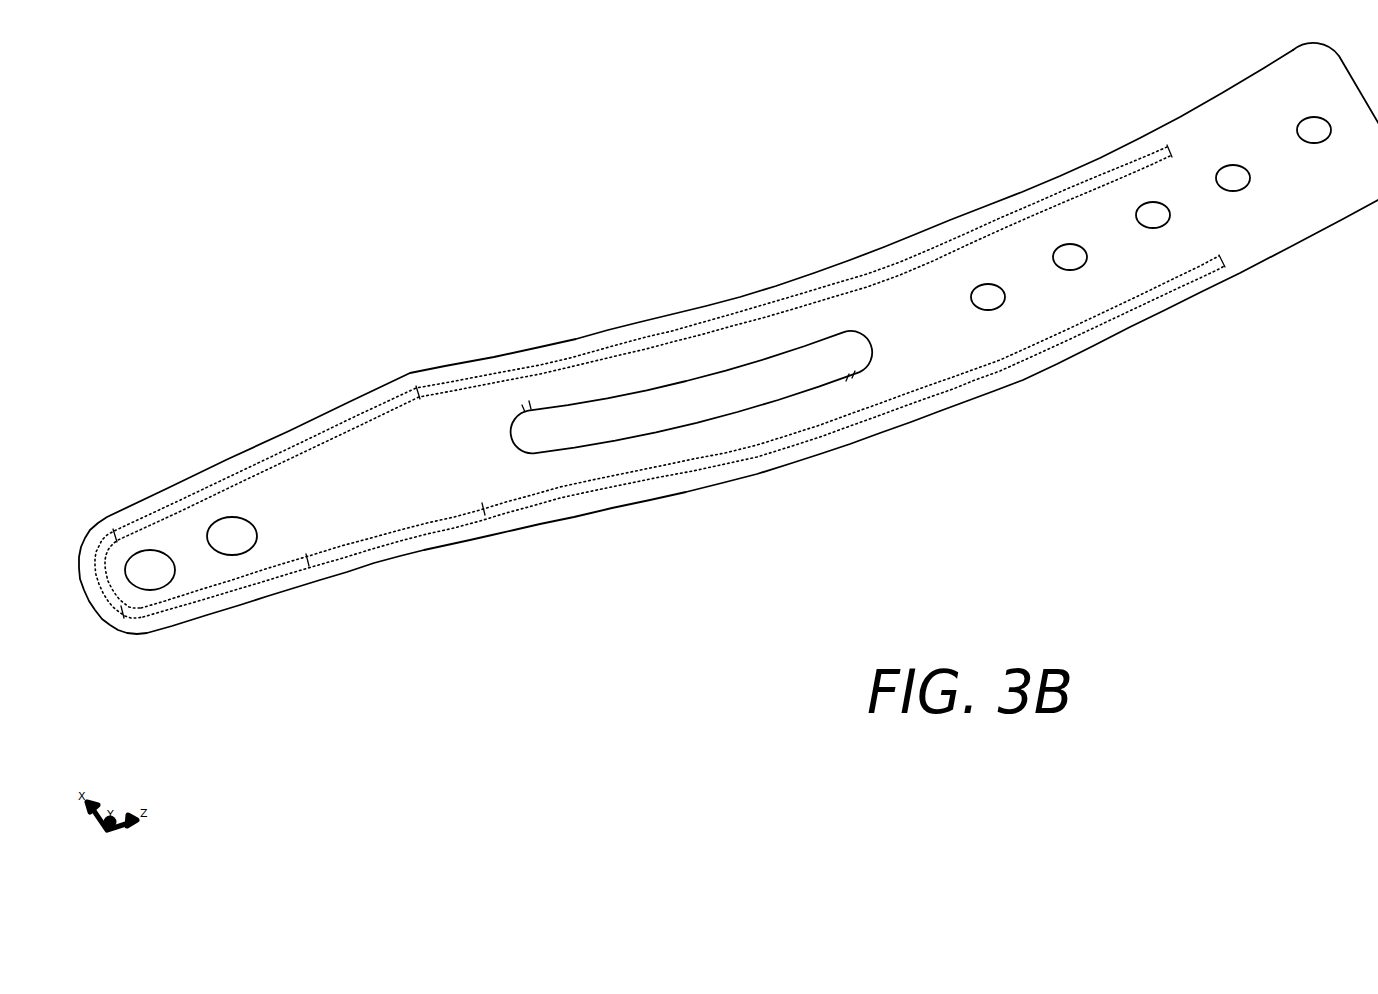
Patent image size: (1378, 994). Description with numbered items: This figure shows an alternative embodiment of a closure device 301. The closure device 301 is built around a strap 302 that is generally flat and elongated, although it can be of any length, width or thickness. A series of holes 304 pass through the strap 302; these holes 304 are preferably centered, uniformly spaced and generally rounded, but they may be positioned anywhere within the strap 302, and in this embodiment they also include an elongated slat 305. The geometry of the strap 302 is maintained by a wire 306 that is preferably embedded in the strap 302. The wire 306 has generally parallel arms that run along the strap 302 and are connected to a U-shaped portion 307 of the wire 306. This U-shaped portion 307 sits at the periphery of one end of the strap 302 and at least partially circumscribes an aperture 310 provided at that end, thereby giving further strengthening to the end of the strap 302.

The closure device 301 is at (1217, 524).
The strap 302 is at (1127, 333).
The holes 304 is at (1068, 247).
The elongated slat 305 is at (703, 387).
The wire 306 is at (727, 458).
The U-shaped portion 307 is at (157, 517).
The aperture 310 is at (158, 575).